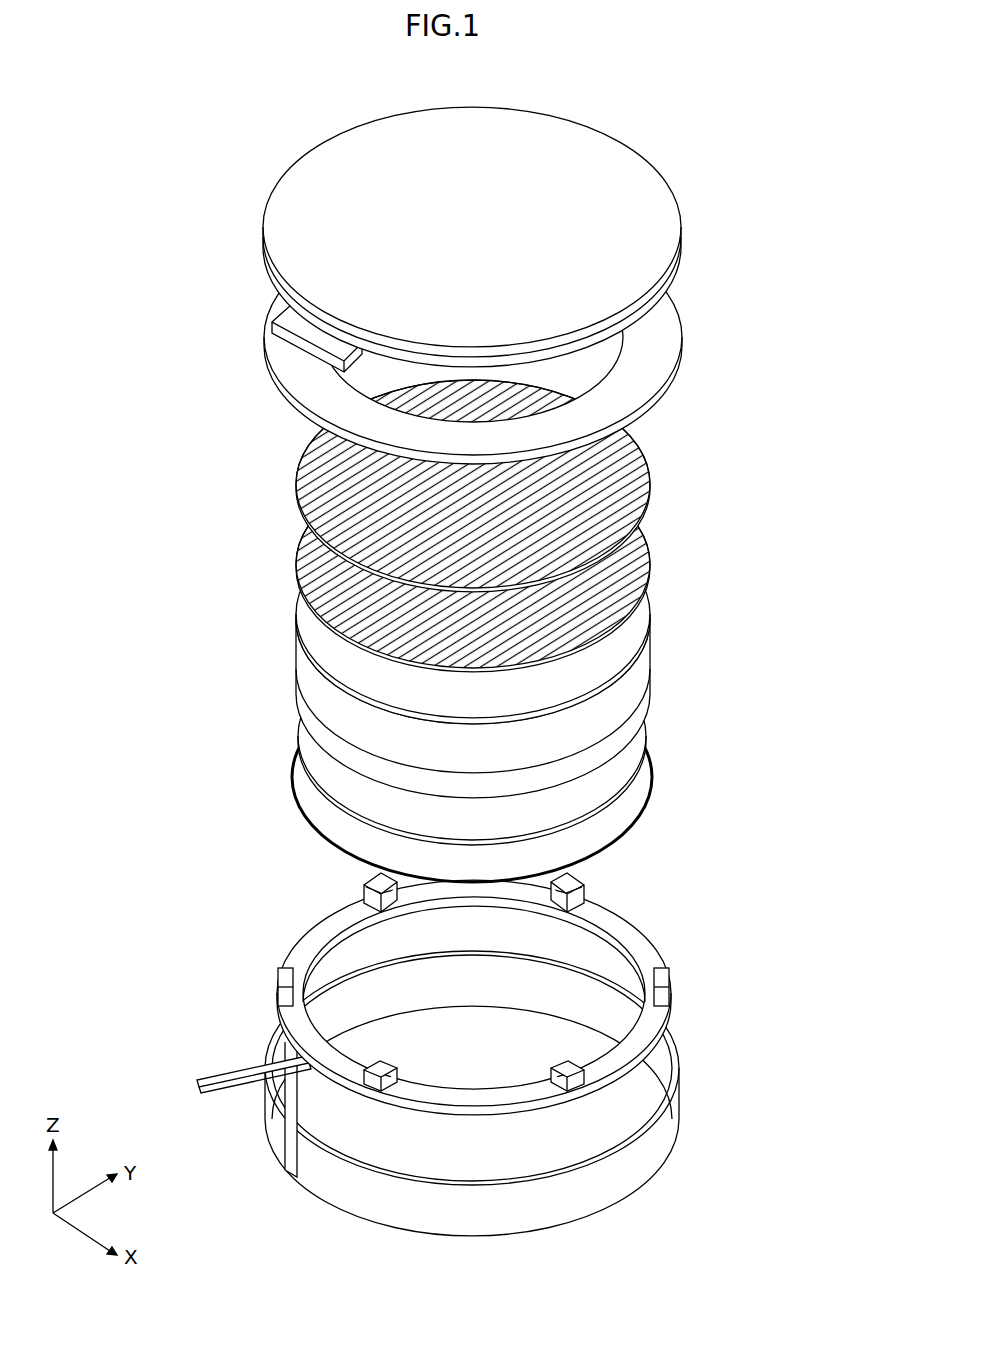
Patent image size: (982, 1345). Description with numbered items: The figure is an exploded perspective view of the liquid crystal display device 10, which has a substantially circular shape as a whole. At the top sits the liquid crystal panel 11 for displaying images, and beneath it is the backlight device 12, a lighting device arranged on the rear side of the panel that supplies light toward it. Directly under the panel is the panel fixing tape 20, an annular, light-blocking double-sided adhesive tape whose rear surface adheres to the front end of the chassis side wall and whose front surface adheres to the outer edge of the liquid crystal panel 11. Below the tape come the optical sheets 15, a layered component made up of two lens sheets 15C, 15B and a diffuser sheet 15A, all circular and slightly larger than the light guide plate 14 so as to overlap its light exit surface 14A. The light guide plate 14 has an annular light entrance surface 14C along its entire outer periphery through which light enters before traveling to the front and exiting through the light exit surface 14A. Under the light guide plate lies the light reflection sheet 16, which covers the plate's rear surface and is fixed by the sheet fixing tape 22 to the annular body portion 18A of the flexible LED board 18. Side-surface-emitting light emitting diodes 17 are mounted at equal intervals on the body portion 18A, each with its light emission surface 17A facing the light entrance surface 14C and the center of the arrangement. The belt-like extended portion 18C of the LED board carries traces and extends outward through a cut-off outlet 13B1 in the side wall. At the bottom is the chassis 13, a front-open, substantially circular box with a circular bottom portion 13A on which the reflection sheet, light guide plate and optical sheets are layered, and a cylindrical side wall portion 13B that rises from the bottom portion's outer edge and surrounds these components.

The liquid crystal display device 10 is at (457, 688).
The liquid crystal panel 11 is at (658, 170).
The backlight device 12 is at (482, 1055).
The chassis 13 is at (423, 1110).
The bottom portion 13A is at (505, 1170).
The side wall portion 13B is at (373, 1203).
The outlet 13B1 is at (290, 1158).
The light guide plate 14 is at (479, 657).
The light exit surface 14A is at (327, 710).
The light entrance surface 14C is at (650, 662).
The optical sheets 15 is at (540, 552).
The diffuser sheet 15A is at (628, 640).
The lens sheet 15B is at (632, 563).
The lens sheet 15C is at (742, 598).
The light reflection sheet 16 is at (627, 768).
The light emitting diode 17 is at (375, 880).
The light emission surface 17A is at (378, 902).
The LED board 18 is at (441, 997).
The body portion 18A is at (650, 957).
The extended portion 18C is at (215, 1080).
The panel fixing tape 20 is at (660, 327).
The sheet fixing tape 22 is at (627, 820).